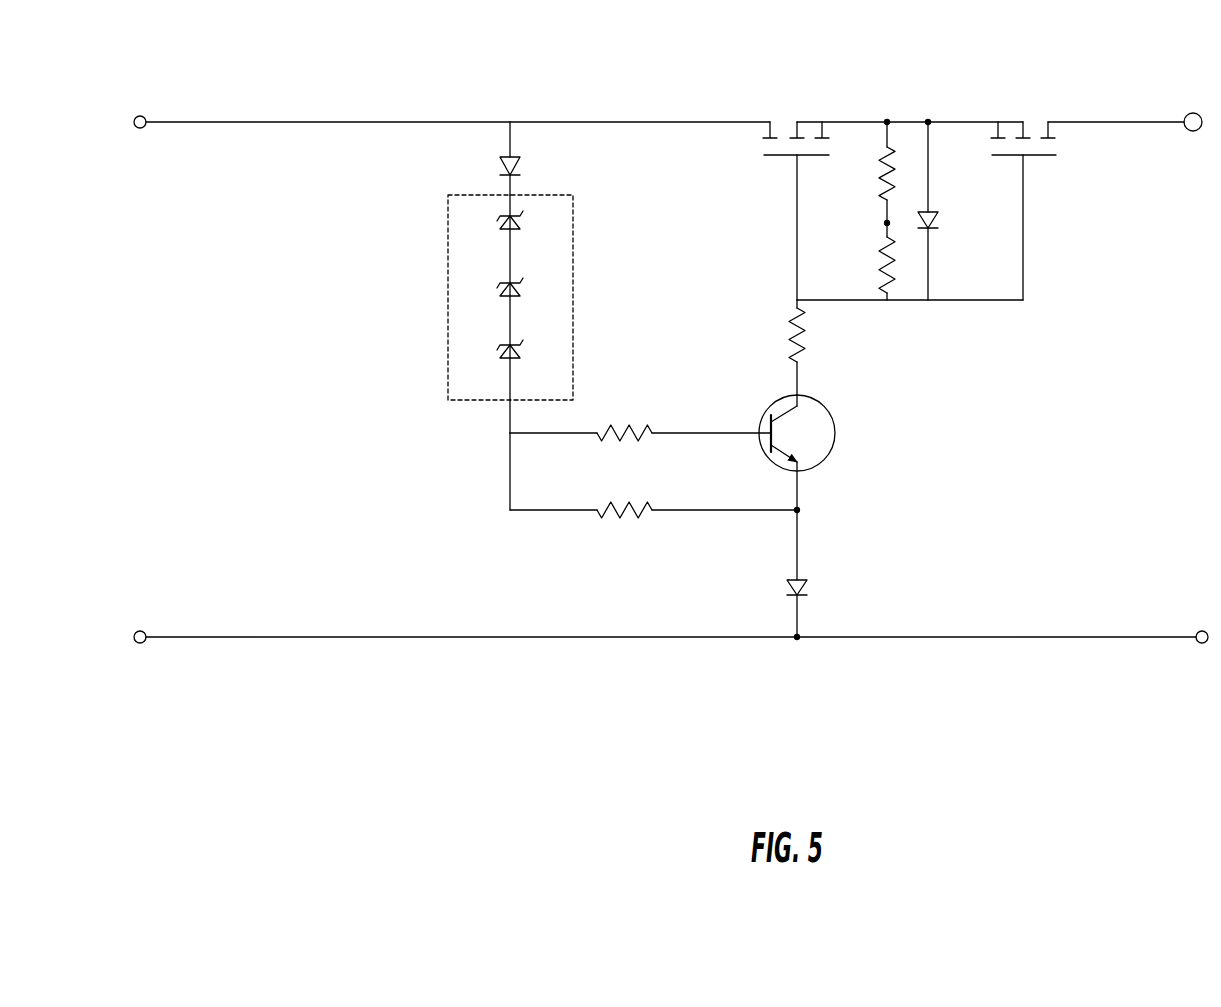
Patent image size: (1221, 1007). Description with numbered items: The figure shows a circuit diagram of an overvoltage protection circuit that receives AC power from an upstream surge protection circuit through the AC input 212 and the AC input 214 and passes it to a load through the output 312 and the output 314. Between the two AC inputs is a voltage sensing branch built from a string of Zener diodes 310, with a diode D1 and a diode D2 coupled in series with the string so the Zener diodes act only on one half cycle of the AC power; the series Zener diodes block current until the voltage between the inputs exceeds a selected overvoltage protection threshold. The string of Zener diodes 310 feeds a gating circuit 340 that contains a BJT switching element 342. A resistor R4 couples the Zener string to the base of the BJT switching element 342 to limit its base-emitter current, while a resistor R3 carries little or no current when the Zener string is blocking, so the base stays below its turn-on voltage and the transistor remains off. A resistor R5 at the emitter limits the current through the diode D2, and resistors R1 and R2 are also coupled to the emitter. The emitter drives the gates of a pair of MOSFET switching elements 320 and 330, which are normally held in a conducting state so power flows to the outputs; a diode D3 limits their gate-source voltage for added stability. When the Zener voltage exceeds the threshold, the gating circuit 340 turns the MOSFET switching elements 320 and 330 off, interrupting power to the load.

The AC input 212 is at (263, 122).
The AC input 214 is at (233, 637).
The string of Zener diodes 310 is at (563, 243).
The output 312 is at (1157, 122).
The output 314 is at (1128, 637).
The MOSFET switching element 320 is at (826, 92).
The MOSFET switching element 330 is at (1027, 89).
The gating circuit 340 is at (1036, 437).
The BJT switching element 342 is at (835, 433).
The resistor R1 is at (871, 173).
The resistor R2 is at (871, 261).
The resistor R3 is at (655, 498).
The resistor R4 is at (640, 418).
The resistor R5 is at (822, 347).
The diode D1 is at (533, 158).
The diode D2 is at (818, 575).
The diode D3 is at (949, 210).